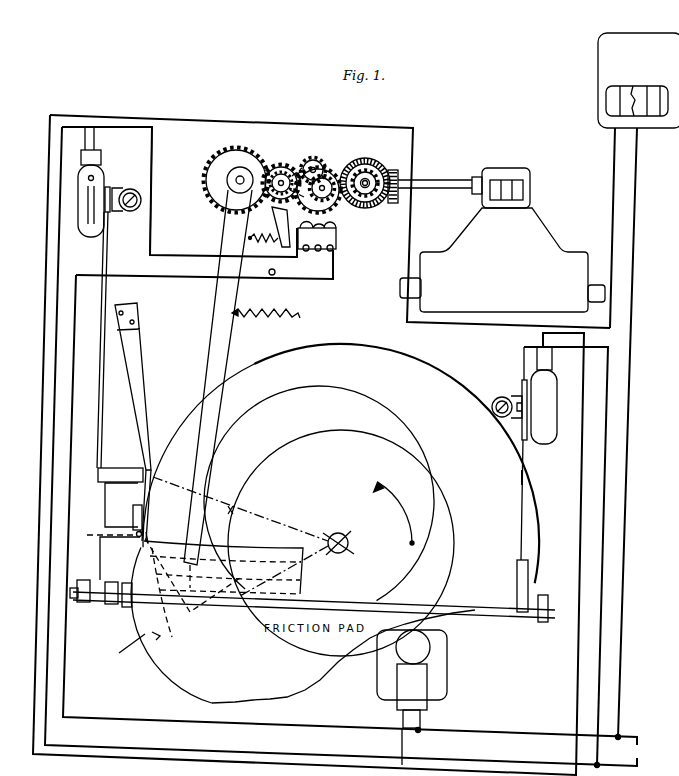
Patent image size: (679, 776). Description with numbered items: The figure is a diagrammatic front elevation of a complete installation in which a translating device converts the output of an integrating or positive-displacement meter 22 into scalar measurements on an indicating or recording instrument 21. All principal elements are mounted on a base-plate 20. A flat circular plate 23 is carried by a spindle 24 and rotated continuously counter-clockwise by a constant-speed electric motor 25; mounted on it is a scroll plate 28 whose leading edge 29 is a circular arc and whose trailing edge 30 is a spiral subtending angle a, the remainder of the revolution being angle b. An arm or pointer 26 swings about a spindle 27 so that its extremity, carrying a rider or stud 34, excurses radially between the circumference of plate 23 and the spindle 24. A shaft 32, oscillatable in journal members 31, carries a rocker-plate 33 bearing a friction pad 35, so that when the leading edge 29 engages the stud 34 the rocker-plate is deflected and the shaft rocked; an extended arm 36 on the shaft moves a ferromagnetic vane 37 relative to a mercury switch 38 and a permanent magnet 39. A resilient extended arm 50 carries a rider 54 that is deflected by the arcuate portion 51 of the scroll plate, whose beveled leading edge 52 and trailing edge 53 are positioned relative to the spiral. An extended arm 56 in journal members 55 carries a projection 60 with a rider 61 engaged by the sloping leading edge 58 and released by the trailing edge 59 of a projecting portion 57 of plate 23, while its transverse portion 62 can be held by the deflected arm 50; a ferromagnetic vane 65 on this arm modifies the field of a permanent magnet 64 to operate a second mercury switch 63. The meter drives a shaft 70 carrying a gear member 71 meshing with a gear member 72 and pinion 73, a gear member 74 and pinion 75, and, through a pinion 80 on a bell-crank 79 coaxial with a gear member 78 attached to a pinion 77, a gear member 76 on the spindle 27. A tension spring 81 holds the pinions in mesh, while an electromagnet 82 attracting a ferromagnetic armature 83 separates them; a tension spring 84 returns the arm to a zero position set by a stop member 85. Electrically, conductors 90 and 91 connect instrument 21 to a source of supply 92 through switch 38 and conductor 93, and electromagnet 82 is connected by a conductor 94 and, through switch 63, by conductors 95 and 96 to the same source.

The base-plate 20 is at (414, 131).
The indicating or recording instrument 21 is at (627, 40).
The meter 22 is at (540, 224).
The flat plate 23 is at (538, 512).
The spindle 24 is at (341, 534).
The constant-speed electric motor 25 is at (447, 667).
The arm or pointer 26 is at (213, 345).
The spindle 27 is at (241, 166).
The scroll plate 28 is at (317, 395).
The leading edge 29 is at (262, 543).
The trailing edge 30 is at (389, 412).
The journal members 31 is at (128, 609).
The shaft 32 is at (500, 612).
The rocker-plate 33 is at (223, 567).
The rider or stud 34 is at (196, 616).
The friction pad 35 is at (230, 584).
The extended arm 36 is at (527, 478).
The vane 37 is at (523, 384).
The mercury switch 38 is at (557, 405).
The permanent magnet 39 is at (496, 398).
The extended arm 50 is at (141, 363).
The arcuate portion 51 is at (152, 540).
The beveled leading edge 52 is at (139, 540).
The trailing edge 53 is at (151, 465).
The rider 54 is at (181, 632).
The journal members 55 is at (88, 605).
The extended arm 56 is at (100, 418).
The projecting portion 57 is at (131, 642).
The leading edge 58 is at (155, 641).
The trailing edge 59 is at (136, 505).
The projection 60 is at (121, 505).
The rider 61 is at (88, 535).
The transverse portion 62 is at (120, 472).
The mercury switch 63 is at (87, 230).
The permanent magnet 64 is at (129, 188).
The ferromagnetic vane 65 is at (108, 214).
The shaft 70 is at (438, 186).
The gear member 71 is at (395, 203).
The gear member 72 is at (366, 205).
The pinion 73 is at (367, 160).
The gear member 74 is at (330, 166).
The pinion 75 is at (357, 200).
The gear member 76 is at (218, 160).
The pinion 77 is at (310, 158).
The gear member 78 is at (281, 164).
The bell-crank 79 is at (276, 215).
The pinion 80 is at (318, 166).
The tension spring 81 is at (266, 244).
The electromagnet 82 is at (337, 246).
The ferromagnetic armature 83 is at (298, 259).
The tension spring 84 is at (258, 318).
The stop member 85 is at (276, 276).
The conductor 90 is at (635, 176).
The conductor 91 is at (612, 178).
The source of electrical supply 92 is at (637, 764).
The conductor 93 is at (603, 566).
The conductor 94 is at (122, 717).
The conductor 95 is at (152, 218).
The conductor 96 is at (122, 749).